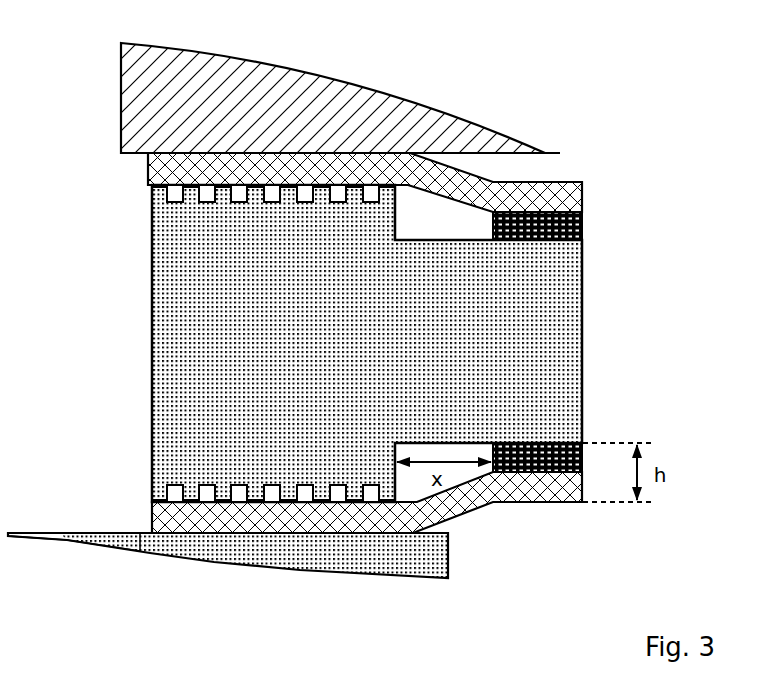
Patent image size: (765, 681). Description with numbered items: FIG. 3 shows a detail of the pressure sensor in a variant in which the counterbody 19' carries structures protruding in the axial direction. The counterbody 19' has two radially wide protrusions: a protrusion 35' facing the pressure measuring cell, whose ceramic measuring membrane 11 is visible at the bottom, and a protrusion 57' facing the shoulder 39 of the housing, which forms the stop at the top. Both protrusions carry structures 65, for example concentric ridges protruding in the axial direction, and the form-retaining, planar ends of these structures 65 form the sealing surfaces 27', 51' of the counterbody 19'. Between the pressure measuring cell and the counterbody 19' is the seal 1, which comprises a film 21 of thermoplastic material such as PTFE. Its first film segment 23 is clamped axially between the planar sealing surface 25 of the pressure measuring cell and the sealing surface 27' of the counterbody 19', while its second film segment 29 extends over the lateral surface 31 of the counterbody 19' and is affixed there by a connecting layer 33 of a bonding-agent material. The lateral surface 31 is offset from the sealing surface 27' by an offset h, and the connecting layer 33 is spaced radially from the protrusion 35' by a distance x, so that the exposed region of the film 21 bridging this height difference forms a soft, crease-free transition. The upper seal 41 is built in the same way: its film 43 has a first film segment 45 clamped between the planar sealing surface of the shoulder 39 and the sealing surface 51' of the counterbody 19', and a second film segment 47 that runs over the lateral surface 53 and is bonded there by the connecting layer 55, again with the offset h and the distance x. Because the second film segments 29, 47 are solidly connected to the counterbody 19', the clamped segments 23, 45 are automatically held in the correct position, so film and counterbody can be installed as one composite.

The seal 1 is at (305, 530).
The measuring membrane 11 is at (125, 540).
The counterbody 19' is at (316, 343).
The film 21 is at (475, 520).
The first film segment 23 is at (267, 518).
The sealing surface 25 is at (260, 537).
The sealing surface 27' is at (159, 458).
The second film segment 29 is at (550, 487).
The lateral surface 31 is at (537, 440).
The connecting layer 33 is at (594, 445).
The protrusion 35' is at (273, 475).
The shoulder 39 is at (172, 112).
The seal 41 is at (305, 126).
The film 43 is at (473, 168).
The first film segment 45 is at (272, 166).
The second film segment 47 is at (550, 197).
The sealing surface 51' is at (152, 221).
The lateral surface 53 is at (535, 243).
The connecting layer 55 is at (584, 232).
The protrusion 57' is at (273, 212).
The structures 65 is at (317, 188).